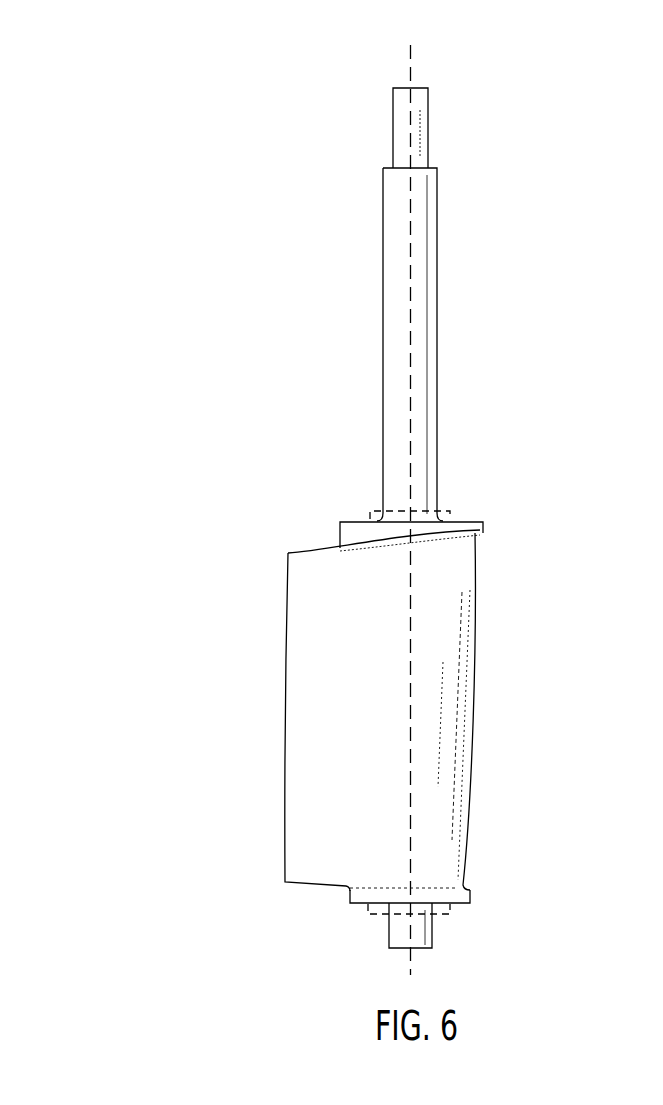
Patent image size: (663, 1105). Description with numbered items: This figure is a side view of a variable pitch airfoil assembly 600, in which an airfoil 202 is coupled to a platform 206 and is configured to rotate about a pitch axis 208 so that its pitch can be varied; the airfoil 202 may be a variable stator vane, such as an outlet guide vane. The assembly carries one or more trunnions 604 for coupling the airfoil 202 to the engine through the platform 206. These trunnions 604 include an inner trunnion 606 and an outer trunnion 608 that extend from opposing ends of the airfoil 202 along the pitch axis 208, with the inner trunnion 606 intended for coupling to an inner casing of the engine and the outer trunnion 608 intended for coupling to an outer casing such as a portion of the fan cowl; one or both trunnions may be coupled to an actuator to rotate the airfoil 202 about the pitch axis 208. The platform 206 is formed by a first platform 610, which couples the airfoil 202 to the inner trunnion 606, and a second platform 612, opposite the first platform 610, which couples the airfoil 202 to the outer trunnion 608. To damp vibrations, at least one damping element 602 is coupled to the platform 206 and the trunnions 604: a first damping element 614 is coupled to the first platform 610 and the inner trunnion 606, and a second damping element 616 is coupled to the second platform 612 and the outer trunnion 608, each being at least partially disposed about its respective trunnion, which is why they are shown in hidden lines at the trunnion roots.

The variable pitch airfoil assembly 600 is at (138, 156).
The pitch axis 208 is at (409, 76).
The trunnions 604 is at (408, 520).
The outer trunnion 608 is at (438, 300).
The inner trunnion 606 is at (389, 932).
The damping element 602 is at (465, 709).
The second damping element 616 is at (446, 508).
The first damping element 614 is at (450, 915).
The platform 206 is at (463, 712).
The second platform 612 is at (478, 531).
The first platform 610 is at (470, 900).
The airfoil 202 is at (448, 747).